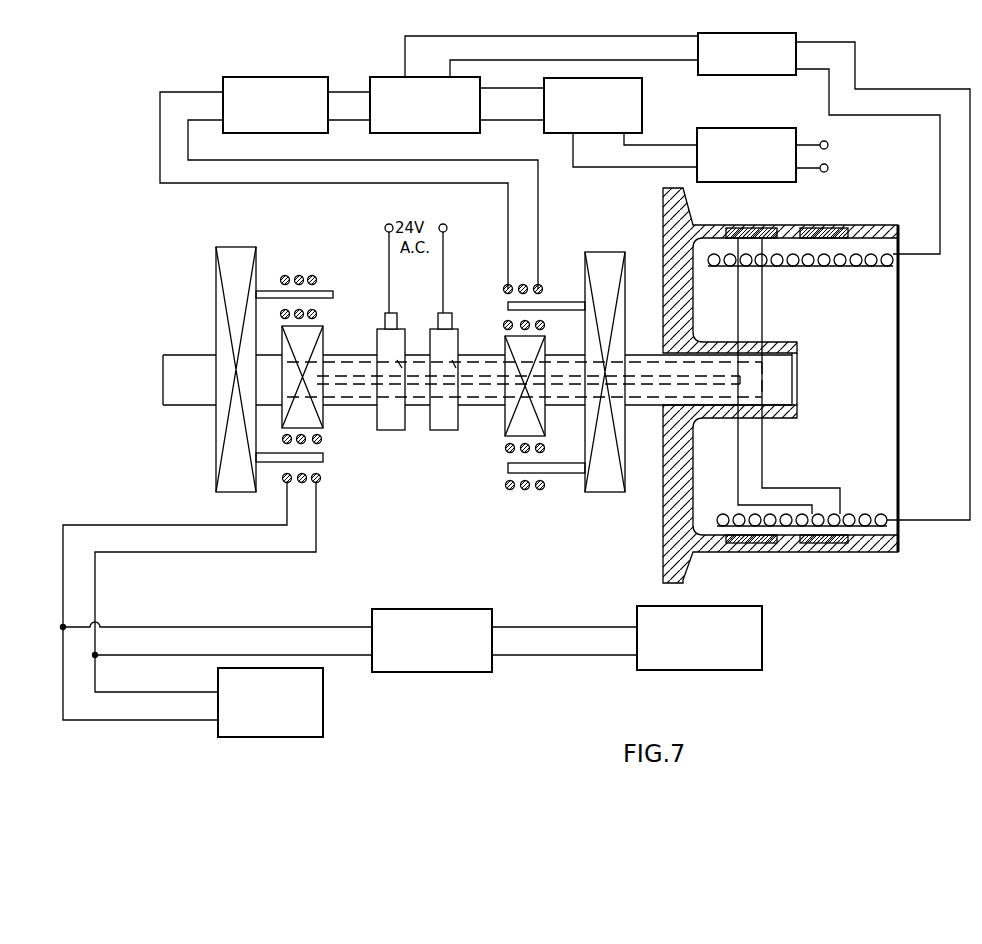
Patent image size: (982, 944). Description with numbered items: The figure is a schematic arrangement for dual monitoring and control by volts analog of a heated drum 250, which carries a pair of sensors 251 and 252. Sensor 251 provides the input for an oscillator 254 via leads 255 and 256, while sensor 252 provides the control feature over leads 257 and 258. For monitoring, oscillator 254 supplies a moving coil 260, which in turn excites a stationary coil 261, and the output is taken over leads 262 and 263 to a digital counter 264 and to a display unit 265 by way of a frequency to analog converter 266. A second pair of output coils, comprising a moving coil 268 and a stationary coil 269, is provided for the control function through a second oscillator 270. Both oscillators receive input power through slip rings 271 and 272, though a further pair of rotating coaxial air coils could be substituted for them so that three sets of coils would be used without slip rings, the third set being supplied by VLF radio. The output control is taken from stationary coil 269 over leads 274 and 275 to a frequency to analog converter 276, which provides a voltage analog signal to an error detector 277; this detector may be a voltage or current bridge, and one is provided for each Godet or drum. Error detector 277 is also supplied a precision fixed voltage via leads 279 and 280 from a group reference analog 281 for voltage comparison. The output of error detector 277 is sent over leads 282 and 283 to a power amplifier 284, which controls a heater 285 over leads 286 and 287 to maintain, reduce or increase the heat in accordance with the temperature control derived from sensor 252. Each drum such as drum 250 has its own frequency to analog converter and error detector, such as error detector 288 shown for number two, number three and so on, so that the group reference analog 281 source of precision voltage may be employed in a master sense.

The drum 250 is at (884, 225).
The sensor 251 is at (833, 228).
The sensor 252 is at (760, 228).
The oscillator 254 is at (323, 410).
The lead 255 is at (740, 472).
The lead 256 is at (762, 472).
The lead 257 is at (738, 306).
The lead 258 is at (762, 306).
The moving coil 260 is at (320, 440).
The stationary coil 261 is at (321, 479).
The lead 262 is at (236, 552).
The lead 263 is at (197, 525).
The digital counter 264 is at (325, 723).
The display unit 265 is at (765, 638).
The frequency to analog converter 266 is at (450, 673).
The moving coil 268 is at (505, 324).
The stationary coil 269 is at (505, 288).
The second oscillator 270 is at (505, 340).
The slip ring 271 is at (386, 313).
The slip ring 272 is at (440, 313).
The lead 274 is at (508, 202).
The lead 275 is at (538, 212).
The frequency to analog converter 276 is at (284, 78).
The error detector 277 is at (386, 77).
The lead 279 is at (528, 88).
The lead 280 is at (528, 120).
The group reference analog 281 is at (643, 107).
The lead 282 is at (530, 38).
The lead 283 is at (589, 60).
The power amplifier 284 is at (741, 75).
The heater 285 is at (888, 268).
The lead 286 is at (875, 89).
The lead 287 is at (873, 115).
The error detector 288 is at (740, 128).